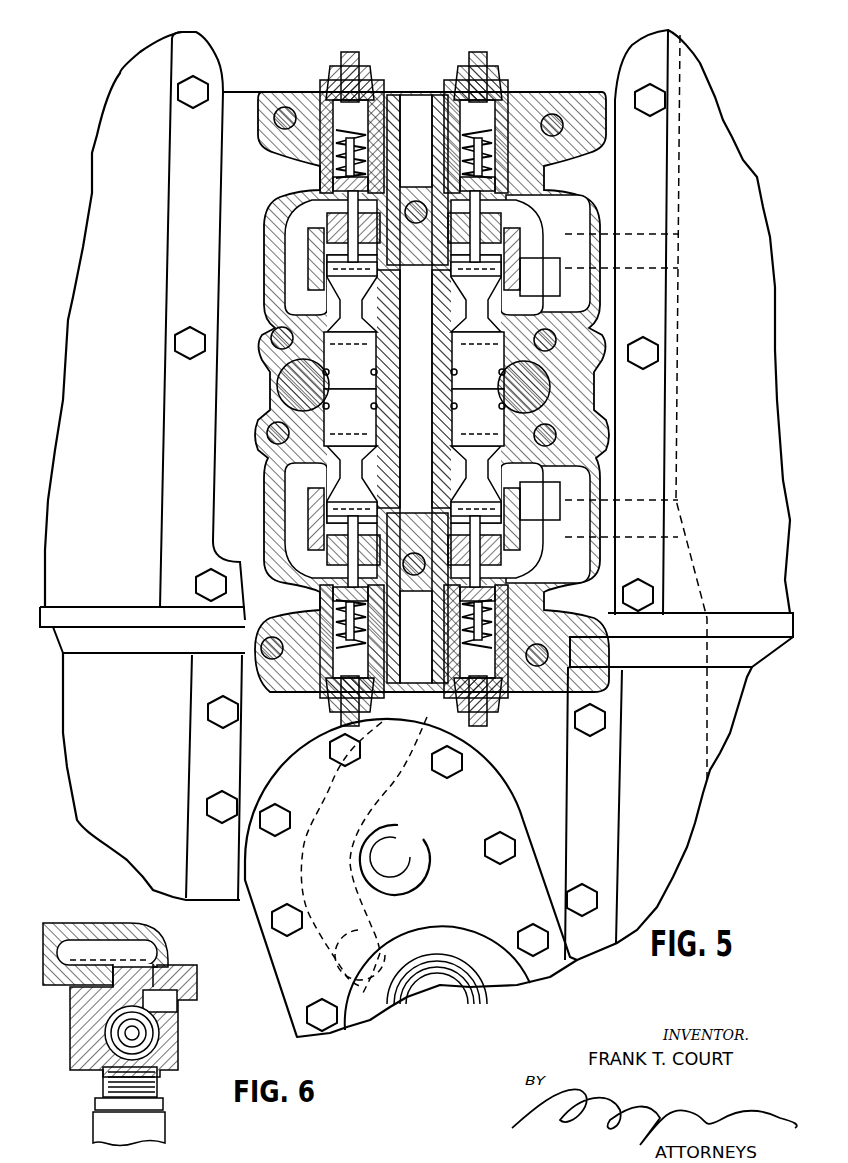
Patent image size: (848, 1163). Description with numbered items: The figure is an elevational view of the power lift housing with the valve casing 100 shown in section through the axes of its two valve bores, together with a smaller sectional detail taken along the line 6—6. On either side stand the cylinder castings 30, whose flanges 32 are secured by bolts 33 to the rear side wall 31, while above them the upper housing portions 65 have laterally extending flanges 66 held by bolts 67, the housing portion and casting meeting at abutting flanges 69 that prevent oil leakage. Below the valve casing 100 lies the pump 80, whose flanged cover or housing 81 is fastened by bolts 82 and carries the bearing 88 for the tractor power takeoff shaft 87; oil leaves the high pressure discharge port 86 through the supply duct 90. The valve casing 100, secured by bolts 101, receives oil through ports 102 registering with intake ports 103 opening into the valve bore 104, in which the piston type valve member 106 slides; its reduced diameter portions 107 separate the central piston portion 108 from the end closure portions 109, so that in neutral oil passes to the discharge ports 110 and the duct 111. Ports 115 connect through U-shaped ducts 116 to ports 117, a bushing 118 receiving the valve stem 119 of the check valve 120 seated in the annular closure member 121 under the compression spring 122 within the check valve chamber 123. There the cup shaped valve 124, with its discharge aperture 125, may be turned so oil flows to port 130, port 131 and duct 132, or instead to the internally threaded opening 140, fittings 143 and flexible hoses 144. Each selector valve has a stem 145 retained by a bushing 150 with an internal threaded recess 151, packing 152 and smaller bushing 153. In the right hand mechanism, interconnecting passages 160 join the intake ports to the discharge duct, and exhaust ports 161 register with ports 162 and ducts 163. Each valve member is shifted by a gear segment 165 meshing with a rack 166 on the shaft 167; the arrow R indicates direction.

In FIG. 5, the cylinder castings 30 is at (134, 785).
In FIG. 6, the rear side wall 31 is at (45, 985).
In FIG. 5, the flanges 32 is at (195, 850).
In FIG. 5, the bolts 33 is at (222, 720).
In FIG. 5, the upper housing portions 65 is at (124, 310).
In FIG. 5, the laterally extending flanges 66 is at (198, 260).
In FIG. 5, the bolts 67 is at (646, 96).
In FIG. 5, the abutting flanges 69 is at (125, 607).
In FIG. 5, the pump 80 is at (452, 826).
In FIG. 5, the flanged cover or housing 81 is at (523, 870).
In FIG. 5, the bolts 82 is at (455, 765).
In FIG. 5, the high pressure discharge port 86 is at (370, 970).
In FIG. 5, the tractor power takeoff shaft 87 is at (448, 990).
In FIG. 5, the bearing 88 is at (443, 970).
In FIG. 5, the supply duct 90 is at (365, 855).
In FIG. 5, the valve casing 100 is at (576, 190).
In FIG. 6, the valve casing 100 is at (193, 1050).
In FIG. 5, the bolts 101 is at (565, 124).
In FIG. 5, the ports 102 is at (444, 354).
In FIG. 5, the intake ports 103 is at (412, 386).
In FIG. 5, the valve bore 104 is at (410, 409).
In FIG. 5, the piston type valve member 106 is at (360, 383).
In FIG. 5, the reduced diameter portions 107 is at (446, 312).
In FIG. 5, the central piston portion 108 is at (413, 373).
In FIG. 5, the end closure portions 109 is at (374, 264).
In FIG. 5, the discharge ports 110 is at (390, 280).
In FIG. 5, the duct 111 is at (427, 398).
In FIG. 5, the ports 115 is at (345, 306).
In FIG. 5, the U-shaped ducts 116 is at (282, 262).
In FIG. 5, the ports 117 is at (318, 230).
In FIG. 5, the bushing 118 is at (300, 245).
In FIG. 5, the valve stem 119 is at (328, 270).
In FIG. 5, the check valve 120 is at (330, 163).
In FIG. 6, the check valve 120 is at (100, 1040).
In FIG. 5, the annular closure member 121 is at (300, 190).
In FIG. 5, the compression spring 122 is at (270, 142).
In FIG. 6, the compression spring 122 is at (158, 1026).
In FIG. 5, the check valve chamber 123 is at (456, 137).
In FIG. 6, the check valve chamber 123 is at (150, 1038).
In FIG. 5, the cup shaped valve 124 is at (444, 114).
In FIG. 6, the cup shaped valve 124 is at (100, 1058).
In FIG. 6, the discharge aperture 125 is at (108, 1068).
In FIG. 6, the port 130 is at (197, 990).
In FIG. 6, the port 131 is at (133, 980).
In FIG. 6, the duct 132 is at (70, 954).
In FIG. 6, the internally threaded opening 140 is at (163, 1090).
In FIG. 6, the fittings 143 is at (155, 1105).
In FIG. 6, the flexible hoses 144 is at (158, 1140).
In FIG. 5, the stem 145 is at (350, 54).
In FIG. 5, the bushing 150 is at (466, 88).
In FIG. 5, the internal threaded recess 151 is at (340, 70).
In FIG. 5, the packing 152 is at (322, 90).
In FIG. 5, the smaller bushing 153 is at (368, 80).
In FIG. 5, the interconnecting passages 160 is at (468, 340).
In FIG. 5, the exhaust ports 161 is at (540, 389).
In FIG. 5, the ports 162 is at (609, 385).
In FIG. 5, the laterally extending passages or ducts 163 is at (622, 233).
In FIG. 5, the gear segment 165 is at (320, 392).
In FIG. 5, the rack 166 is at (280, 372).
In FIG. 5, the shaft 167 is at (290, 385).
In FIG. 5, the section line 6 is at (258, 153).
In FIG. 5, the direction arrow R is at (110, 425).